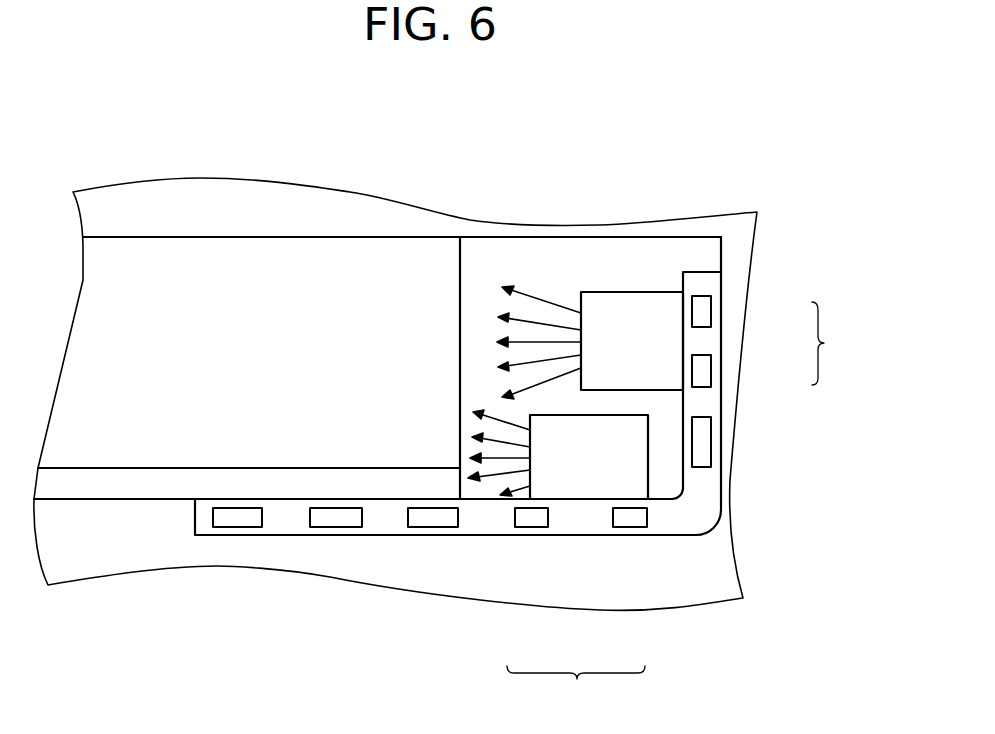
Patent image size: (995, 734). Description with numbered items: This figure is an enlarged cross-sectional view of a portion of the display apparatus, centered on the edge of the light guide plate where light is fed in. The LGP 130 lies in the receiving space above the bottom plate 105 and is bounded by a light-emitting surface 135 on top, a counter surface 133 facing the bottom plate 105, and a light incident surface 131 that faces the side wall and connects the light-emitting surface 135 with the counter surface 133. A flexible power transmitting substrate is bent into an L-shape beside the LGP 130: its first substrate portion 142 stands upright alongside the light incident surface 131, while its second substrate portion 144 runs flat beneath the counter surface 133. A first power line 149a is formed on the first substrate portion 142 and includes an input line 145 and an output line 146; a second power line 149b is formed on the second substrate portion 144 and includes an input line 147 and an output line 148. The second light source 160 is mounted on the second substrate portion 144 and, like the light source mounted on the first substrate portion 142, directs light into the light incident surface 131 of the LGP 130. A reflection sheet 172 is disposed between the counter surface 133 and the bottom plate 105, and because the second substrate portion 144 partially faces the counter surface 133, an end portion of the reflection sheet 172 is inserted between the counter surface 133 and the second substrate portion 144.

The bottom plate 105 is at (298, 565).
The LGP 130 is at (306, 270).
The light incident surface 131 is at (460, 272).
The counter surface 133 is at (83, 470).
The light-emitting surface 135 is at (385, 237).
The first substrate portion 142 is at (707, 408).
The second substrate portion 144 is at (375, 527).
The input line 145 is at (706, 372).
The output line 146 is at (706, 313).
The input line 147 is at (535, 518).
The output line 148 is at (623, 520).
The first power line 149a is at (842, 343).
The second power line 149b is at (576, 687).
The second light source 160 is at (640, 468).
The reflection sheet 172 is at (140, 490).